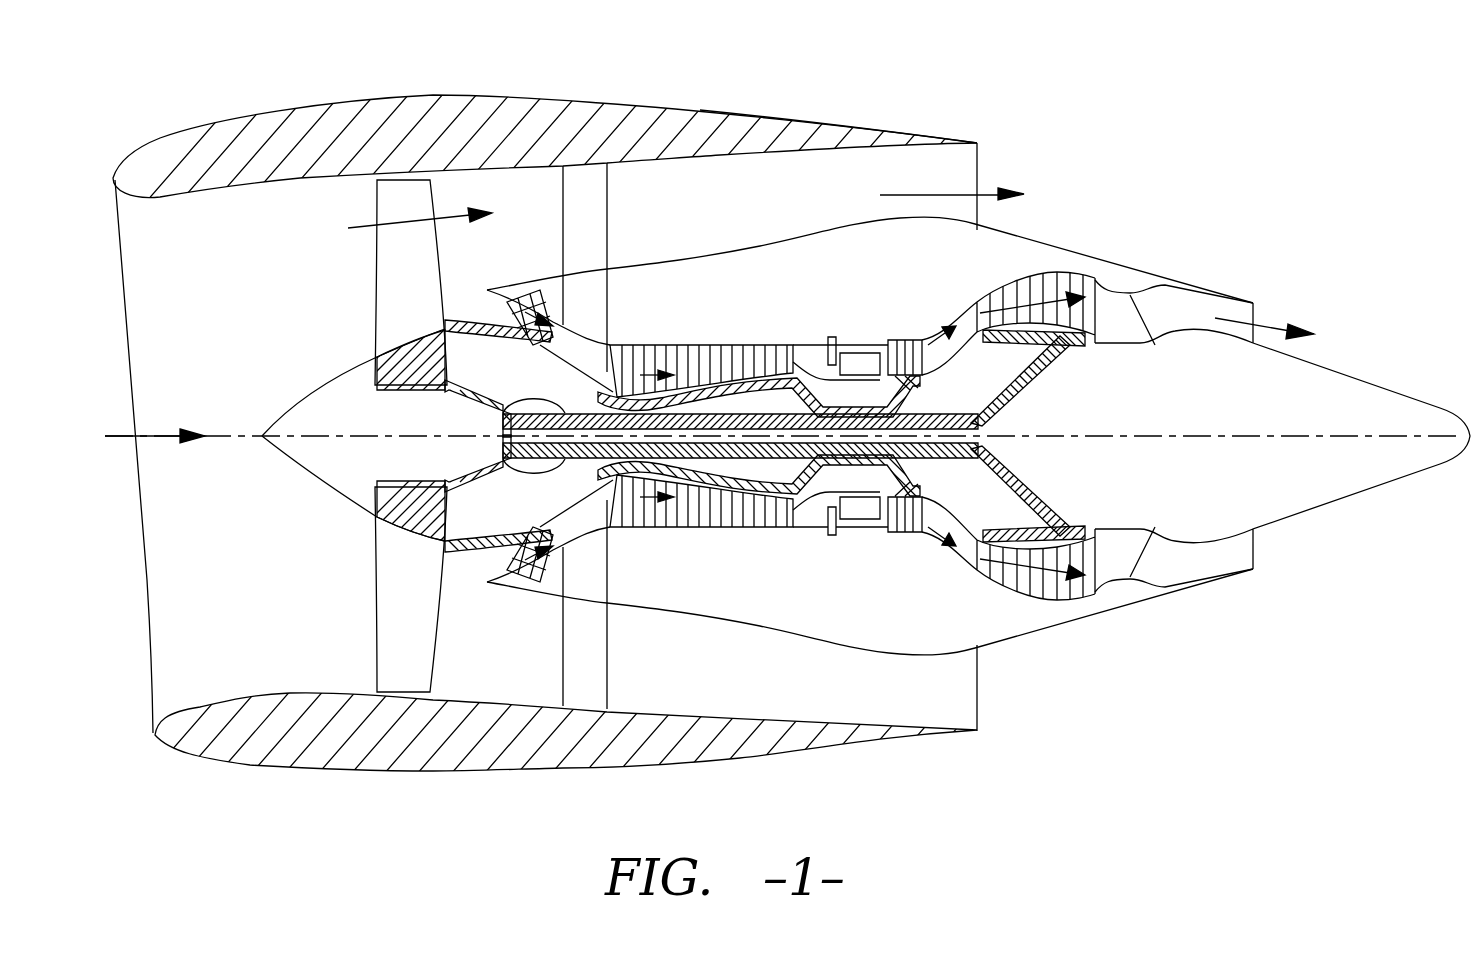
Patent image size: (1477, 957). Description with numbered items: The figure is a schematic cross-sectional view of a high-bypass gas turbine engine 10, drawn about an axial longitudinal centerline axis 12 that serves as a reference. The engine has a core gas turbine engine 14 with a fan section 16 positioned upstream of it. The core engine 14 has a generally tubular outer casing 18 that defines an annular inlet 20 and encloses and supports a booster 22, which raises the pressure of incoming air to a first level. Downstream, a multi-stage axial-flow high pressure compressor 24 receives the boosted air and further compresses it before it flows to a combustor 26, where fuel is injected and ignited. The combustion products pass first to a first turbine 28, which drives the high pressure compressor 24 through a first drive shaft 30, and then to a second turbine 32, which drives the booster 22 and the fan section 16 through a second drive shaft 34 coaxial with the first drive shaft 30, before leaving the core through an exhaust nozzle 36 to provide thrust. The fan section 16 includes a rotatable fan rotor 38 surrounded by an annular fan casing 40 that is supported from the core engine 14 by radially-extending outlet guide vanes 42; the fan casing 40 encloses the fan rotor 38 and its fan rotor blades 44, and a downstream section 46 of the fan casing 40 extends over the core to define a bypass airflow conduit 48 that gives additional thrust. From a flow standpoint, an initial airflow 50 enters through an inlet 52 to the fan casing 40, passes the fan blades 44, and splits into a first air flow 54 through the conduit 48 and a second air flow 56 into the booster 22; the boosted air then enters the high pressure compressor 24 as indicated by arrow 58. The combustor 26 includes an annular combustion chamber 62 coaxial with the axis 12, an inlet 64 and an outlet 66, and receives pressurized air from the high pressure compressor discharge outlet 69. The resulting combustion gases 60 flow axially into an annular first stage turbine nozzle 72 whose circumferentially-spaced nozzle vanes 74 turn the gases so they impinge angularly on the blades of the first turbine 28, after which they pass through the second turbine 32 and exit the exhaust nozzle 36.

The gas turbine engine 10 is at (1172, 182).
The longitudinal centerline axis 12 is at (1160, 432).
The core gas turbine engine 14 is at (842, 280).
The fan section 16 is at (456, 76).
The outer casing 18 is at (810, 640).
The annular inlet 20 is at (486, 559).
The booster 22 is at (572, 522).
The high pressure compressor 24 is at (642, 510).
The combustor 26 is at (848, 512).
The first turbine 28 is at (935, 510).
The first drive shaft 30 is at (907, 380).
The second turbine 32 is at (1080, 595).
The second drive shaft 34 is at (505, 400).
The exhaust nozzle 36 is at (1255, 310).
The fan rotor 38 is at (440, 392).
The fan casing 40 is at (445, 775).
The outlet guide vanes 42 is at (608, 232).
The fan rotor blades 44 is at (370, 635).
The downstream section 46 is at (868, 128).
The bypass airflow conduit 48 is at (769, 211).
The initial airflow 50 is at (148, 430).
The inlet 52 is at (152, 692).
The first air flow 54 is at (387, 222).
The second air flow 56 is at (467, 302).
The compressed airflow to high pressure compressor 58 is at (630, 352).
The combustion products 60 is at (902, 345).
The combustion chamber 62 is at (865, 520).
The combustor inlet 64 is at (820, 348).
The combustor outlet 66 is at (870, 350).
The high pressure compressor discharge outlet 69 is at (815, 520).
The first stage turbine nozzle 72 is at (880, 520).
The nozzle vanes 74 is at (890, 480).